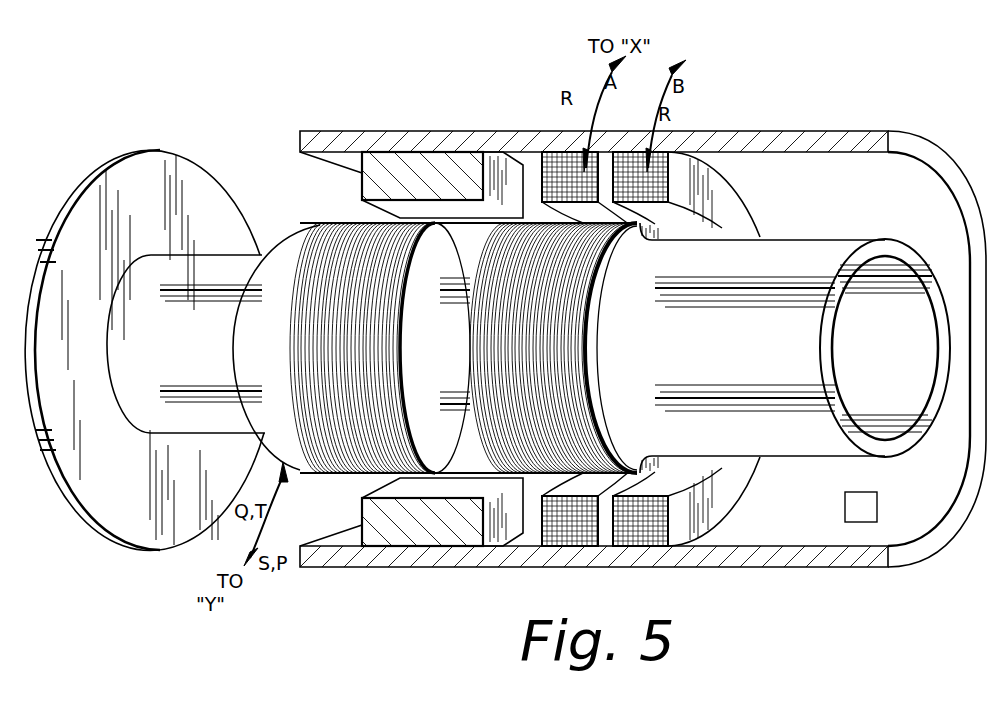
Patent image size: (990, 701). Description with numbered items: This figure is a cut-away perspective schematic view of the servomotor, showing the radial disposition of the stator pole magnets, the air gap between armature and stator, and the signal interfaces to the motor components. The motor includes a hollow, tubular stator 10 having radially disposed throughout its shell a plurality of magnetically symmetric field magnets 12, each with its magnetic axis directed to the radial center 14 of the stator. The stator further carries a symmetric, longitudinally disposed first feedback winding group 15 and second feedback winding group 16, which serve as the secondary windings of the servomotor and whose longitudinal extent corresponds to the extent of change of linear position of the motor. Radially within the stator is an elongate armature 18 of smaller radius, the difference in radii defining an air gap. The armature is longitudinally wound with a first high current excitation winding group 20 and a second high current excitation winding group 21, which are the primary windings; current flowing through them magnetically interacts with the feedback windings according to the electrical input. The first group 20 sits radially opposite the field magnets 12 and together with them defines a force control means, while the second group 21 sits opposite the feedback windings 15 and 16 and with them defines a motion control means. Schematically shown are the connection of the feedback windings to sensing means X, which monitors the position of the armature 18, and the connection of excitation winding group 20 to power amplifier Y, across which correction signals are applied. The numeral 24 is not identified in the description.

The stator 10 is at (915, 551).
The field magnets 12 is at (453, 172).
The radial center 14 is at (896, 353).
The first feedback winding group 15 is at (557, 164).
The second feedback winding group 16 is at (668, 170).
The armature 18 is at (947, 322).
The first high current excitation winding group 20 is at (338, 458).
The second high current excitation winding group 21 is at (620, 234).
The second coil 24 is at (600, 344).